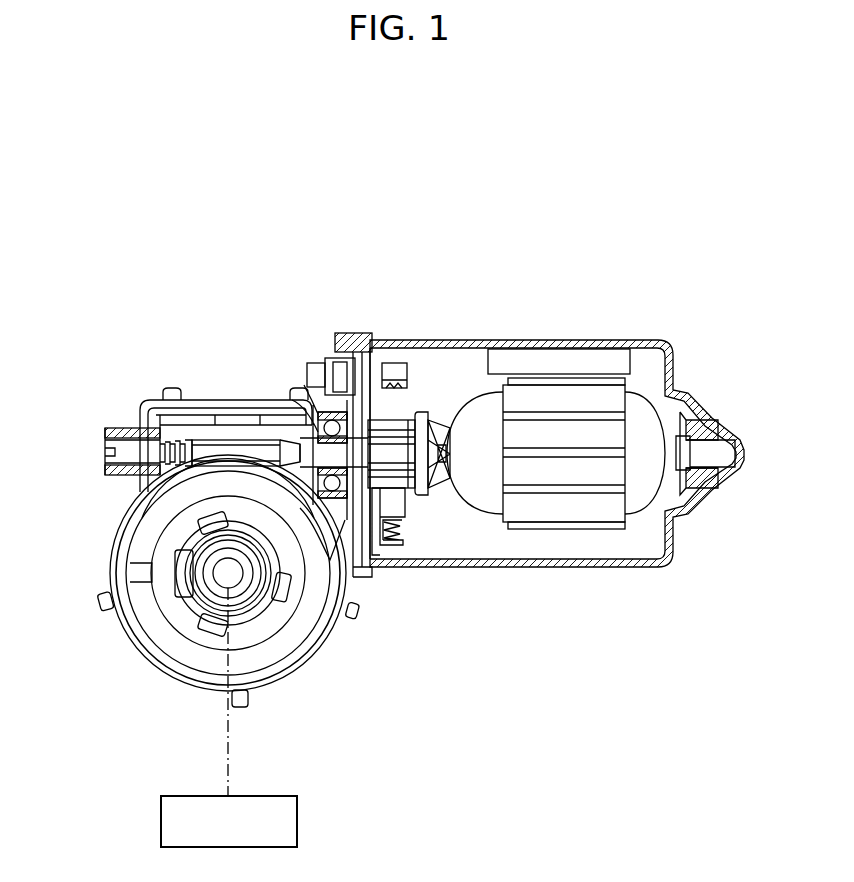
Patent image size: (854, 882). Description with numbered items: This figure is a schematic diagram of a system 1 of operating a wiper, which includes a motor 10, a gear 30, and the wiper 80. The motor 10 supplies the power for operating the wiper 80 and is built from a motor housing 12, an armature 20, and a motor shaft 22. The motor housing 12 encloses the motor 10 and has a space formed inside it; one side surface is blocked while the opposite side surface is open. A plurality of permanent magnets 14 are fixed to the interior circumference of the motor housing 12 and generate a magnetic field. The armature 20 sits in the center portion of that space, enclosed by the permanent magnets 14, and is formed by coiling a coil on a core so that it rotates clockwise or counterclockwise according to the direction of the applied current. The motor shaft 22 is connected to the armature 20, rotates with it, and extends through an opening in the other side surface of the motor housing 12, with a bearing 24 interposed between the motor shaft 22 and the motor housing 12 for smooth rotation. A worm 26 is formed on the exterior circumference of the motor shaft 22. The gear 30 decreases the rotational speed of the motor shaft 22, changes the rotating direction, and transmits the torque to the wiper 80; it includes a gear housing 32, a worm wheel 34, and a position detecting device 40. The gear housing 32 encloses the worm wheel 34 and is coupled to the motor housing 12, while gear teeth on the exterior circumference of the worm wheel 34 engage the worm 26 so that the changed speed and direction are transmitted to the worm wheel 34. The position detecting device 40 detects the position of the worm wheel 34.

The system of operating a wiper 1 is at (381, 269).
The motor 10 is at (557, 572).
The motor housing 12 is at (628, 566).
The permanent magnets 14 is at (603, 400).
The armature 20 is at (652, 396).
The motor shaft 22 is at (320, 453).
The bearing 24 is at (393, 352).
The worm 26 is at (241, 438).
The gear 30 is at (136, 398).
The gear housing 32 is at (130, 503).
The worm wheel 34 is at (130, 548).
The position detecting device 40 is at (325, 657).
The wiper 80 is at (297, 821).